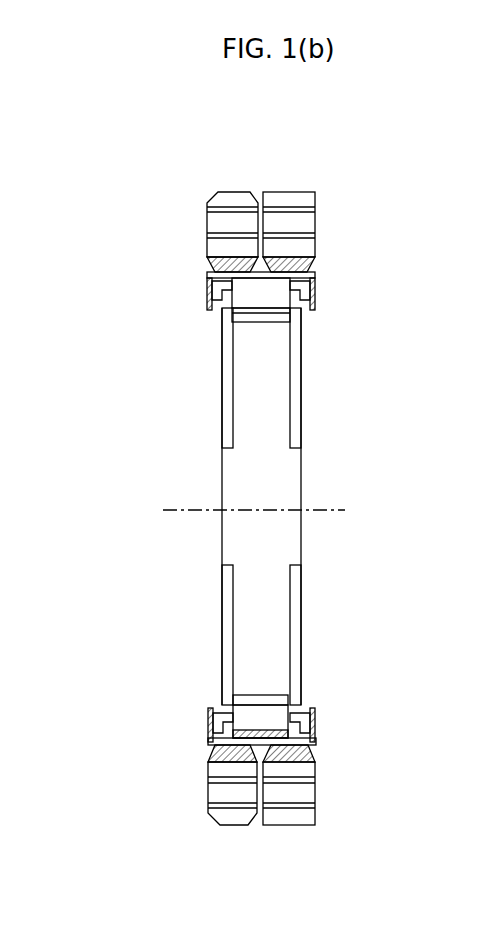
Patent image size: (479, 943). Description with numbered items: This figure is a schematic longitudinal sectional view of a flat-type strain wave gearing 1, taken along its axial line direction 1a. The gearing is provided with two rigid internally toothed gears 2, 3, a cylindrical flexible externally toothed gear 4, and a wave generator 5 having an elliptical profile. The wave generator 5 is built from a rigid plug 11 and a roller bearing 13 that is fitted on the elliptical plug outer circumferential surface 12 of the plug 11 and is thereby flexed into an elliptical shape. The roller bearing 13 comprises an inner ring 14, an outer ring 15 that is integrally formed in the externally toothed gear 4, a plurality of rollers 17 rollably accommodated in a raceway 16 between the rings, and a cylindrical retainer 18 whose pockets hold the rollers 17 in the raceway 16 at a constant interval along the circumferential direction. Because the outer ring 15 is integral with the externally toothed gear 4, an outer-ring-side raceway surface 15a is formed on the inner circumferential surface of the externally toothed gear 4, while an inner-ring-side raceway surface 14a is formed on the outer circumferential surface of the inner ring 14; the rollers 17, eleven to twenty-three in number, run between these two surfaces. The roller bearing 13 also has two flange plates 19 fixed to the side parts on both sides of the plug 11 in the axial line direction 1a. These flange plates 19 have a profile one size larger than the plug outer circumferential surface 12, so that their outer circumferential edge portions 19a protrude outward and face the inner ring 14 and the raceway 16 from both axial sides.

The strain wave gearing 1 is at (367, 210).
The axial line direction 1a is at (185, 510).
The rigid internally toothed gear 2 is at (320, 200).
The rigid internally toothed gear 3 is at (205, 200).
The cylindrical flexible externally toothed gear 4 is at (207, 281).
The wave generator 5 is at (204, 383).
The rigid plug 11 is at (268, 433).
The plug outer circumferential surface 12 is at (280, 317).
The roller bearing 13 is at (310, 292).
The inner ring 14 is at (270, 700).
The inner-ring-side raceway surface 14a is at (228, 725).
The outer ring 15 is at (313, 753).
The outer-ring-side raceway surface 15a is at (230, 748).
The raceway 16 is at (310, 727).
The rollers 17 is at (280, 710).
The cylindrical retainer 18 is at (218, 713).
The flange plates 19 is at (226, 636).
The outer circumferential edge portions 19a is at (226, 308).